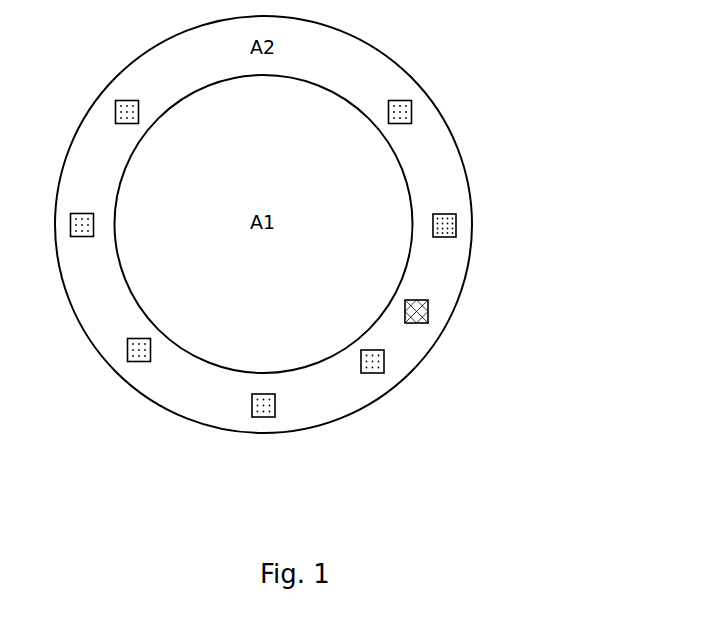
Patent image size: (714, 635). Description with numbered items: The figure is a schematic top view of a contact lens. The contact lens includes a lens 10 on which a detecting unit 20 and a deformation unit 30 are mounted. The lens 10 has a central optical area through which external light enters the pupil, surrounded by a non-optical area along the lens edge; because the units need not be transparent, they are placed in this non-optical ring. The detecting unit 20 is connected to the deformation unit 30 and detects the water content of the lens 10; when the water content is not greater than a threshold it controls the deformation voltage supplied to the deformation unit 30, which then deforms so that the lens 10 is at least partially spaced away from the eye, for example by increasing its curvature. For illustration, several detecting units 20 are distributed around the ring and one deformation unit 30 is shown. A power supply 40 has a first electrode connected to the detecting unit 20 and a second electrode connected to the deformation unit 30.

The lens 10 is at (263, 266).
The detecting unit 20 is at (225, 286).
The deformation unit 30 is at (466, 366).
The power supply 40 is at (494, 283).